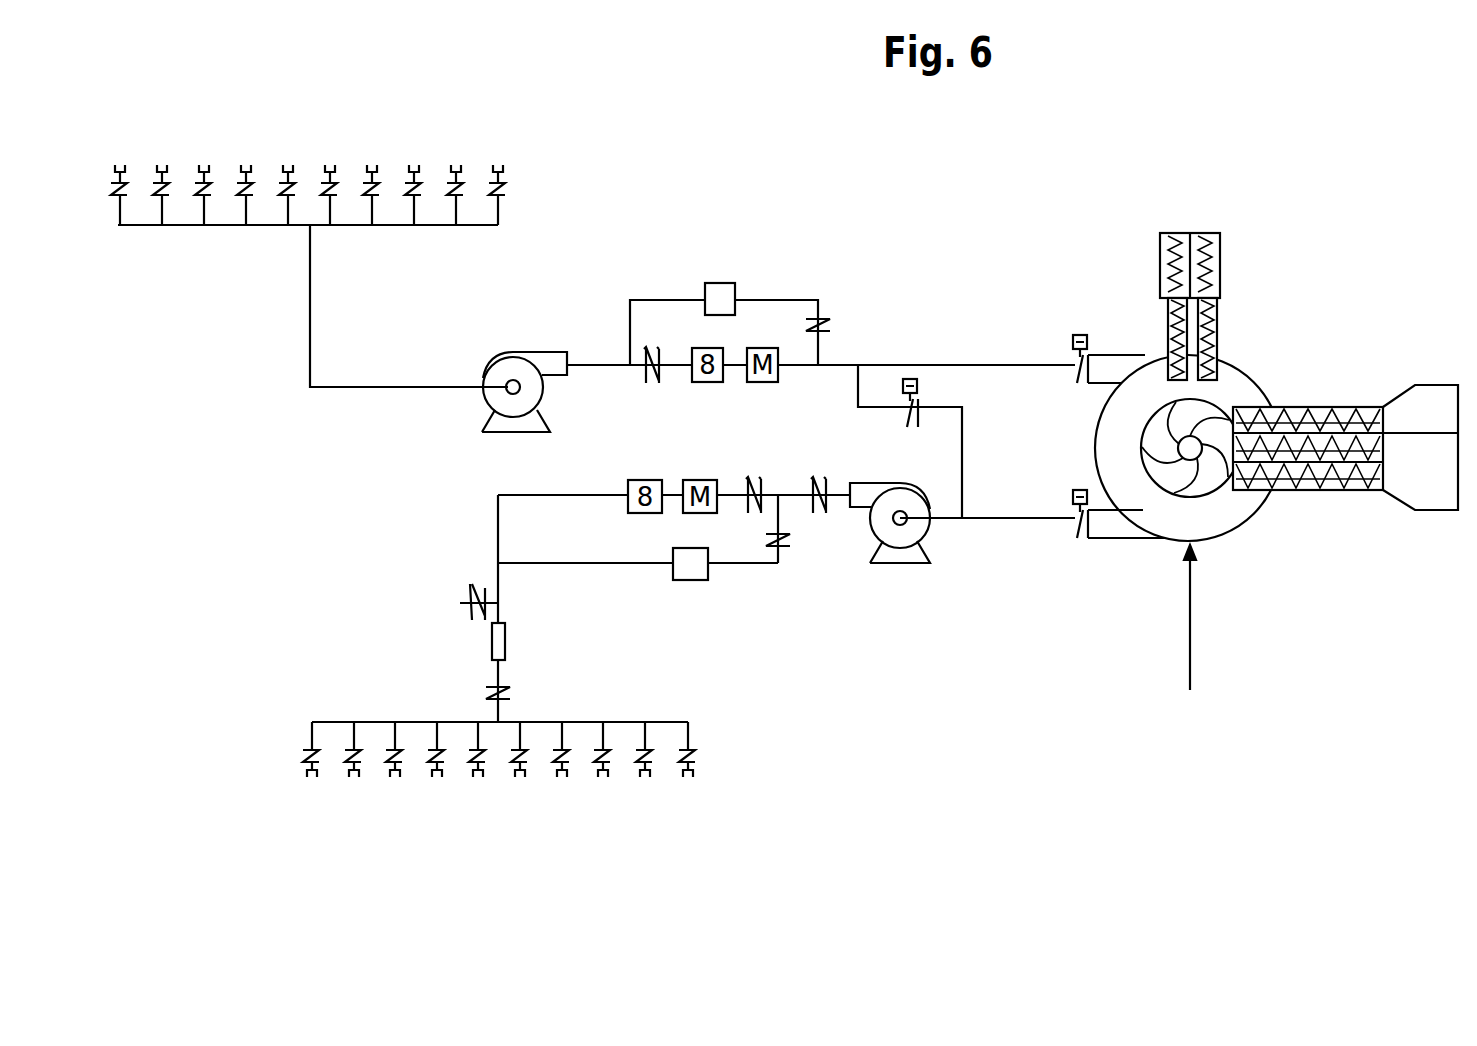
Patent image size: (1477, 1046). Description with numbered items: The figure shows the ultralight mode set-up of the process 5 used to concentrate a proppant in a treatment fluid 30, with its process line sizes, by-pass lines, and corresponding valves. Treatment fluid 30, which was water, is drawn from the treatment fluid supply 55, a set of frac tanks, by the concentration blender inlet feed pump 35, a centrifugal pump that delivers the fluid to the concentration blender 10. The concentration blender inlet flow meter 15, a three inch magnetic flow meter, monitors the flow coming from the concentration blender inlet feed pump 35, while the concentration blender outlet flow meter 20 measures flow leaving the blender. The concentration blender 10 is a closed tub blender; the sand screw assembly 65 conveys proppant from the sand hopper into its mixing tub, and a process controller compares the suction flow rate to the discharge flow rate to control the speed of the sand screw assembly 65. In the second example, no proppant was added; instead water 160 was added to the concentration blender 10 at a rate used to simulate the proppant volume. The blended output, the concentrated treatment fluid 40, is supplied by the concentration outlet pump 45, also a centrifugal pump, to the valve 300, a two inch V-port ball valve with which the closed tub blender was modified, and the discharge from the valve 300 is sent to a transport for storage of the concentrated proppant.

The process 5 is at (1237, 157).
The concentration blender 10 is at (1245, 365).
The concentration blender inlet flow meter 15 is at (720, 283).
The concentration blender outlet flow meter 20 is at (693, 582).
The treatment fluid 30 is at (310, 387).
The concentration blender inlet feed pump 35 is at (525, 352).
The concentrated treatment fluid 40 is at (985, 518).
The concentration outlet pump 45 is at (918, 560).
The treatment fluid supply 55 is at (381, 122).
The sand screw assembly 65 is at (1312, 490).
The water 160 is at (1198, 612).
The valve 300 is at (470, 590).